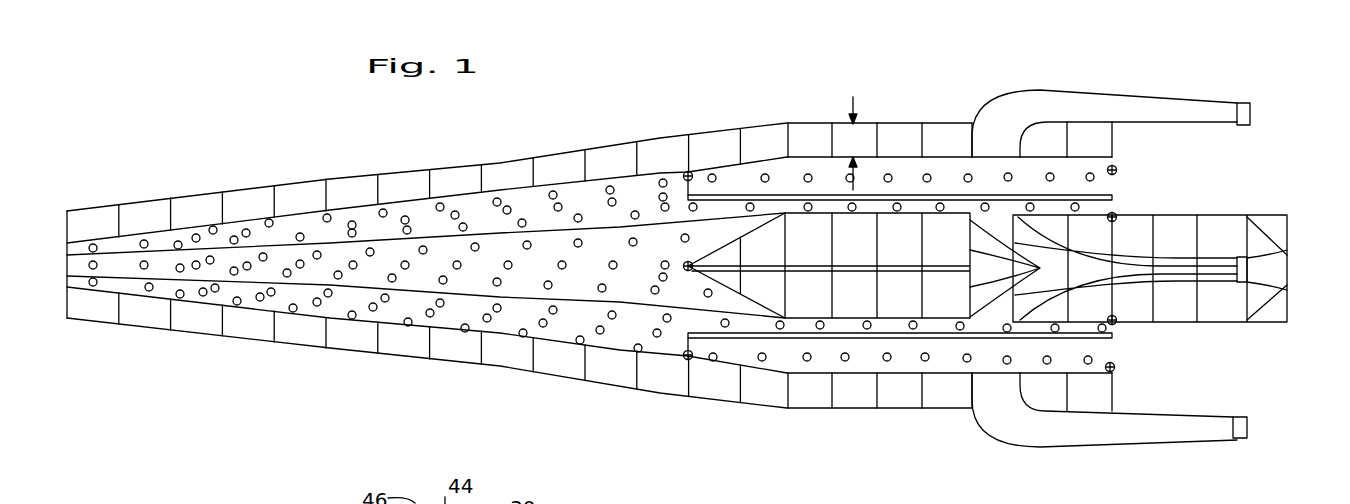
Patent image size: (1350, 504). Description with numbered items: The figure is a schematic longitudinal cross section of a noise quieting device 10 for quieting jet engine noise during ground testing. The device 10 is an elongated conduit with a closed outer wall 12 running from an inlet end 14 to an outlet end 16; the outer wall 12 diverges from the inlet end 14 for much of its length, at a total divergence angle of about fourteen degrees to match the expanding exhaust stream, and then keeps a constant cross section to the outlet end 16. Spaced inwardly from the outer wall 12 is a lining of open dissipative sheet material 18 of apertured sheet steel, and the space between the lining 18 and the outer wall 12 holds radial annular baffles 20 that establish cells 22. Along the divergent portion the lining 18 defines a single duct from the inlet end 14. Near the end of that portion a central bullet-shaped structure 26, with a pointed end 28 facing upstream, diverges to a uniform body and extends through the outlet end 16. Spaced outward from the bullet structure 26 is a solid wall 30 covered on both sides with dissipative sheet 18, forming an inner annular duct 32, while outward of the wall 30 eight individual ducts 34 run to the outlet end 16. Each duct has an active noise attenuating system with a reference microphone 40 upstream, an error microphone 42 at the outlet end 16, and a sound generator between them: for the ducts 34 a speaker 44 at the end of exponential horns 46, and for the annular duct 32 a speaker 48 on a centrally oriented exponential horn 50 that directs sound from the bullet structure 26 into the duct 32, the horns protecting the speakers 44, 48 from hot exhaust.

The noise quieting device 10 is at (638, 122).
The closed outer wall 12 is at (457, 162).
The inlet end 14 is at (67, 272).
The outlet end 16 is at (1112, 197).
The dissipative layer sheet material 18 is at (363, 212).
The radial annular baffles 20 is at (580, 165).
The cells 22 is at (297, 198).
The bullet-shaped structure 26 is at (800, 322).
The pointed end 28 is at (700, 284).
The solid wall 30 is at (906, 196).
The annular duct 32 is at (865, 210).
The individual ducts 34 is at (895, 165).
The reference microphone 40 is at (689, 170).
The error microphone 42 is at (1115, 167).
The speaker 44 is at (1250, 112).
The exponential horns 46 is at (1083, 90).
The speaker 48 is at (1288, 288).
The centrally oriented exponential horn 50 is at (1080, 270).